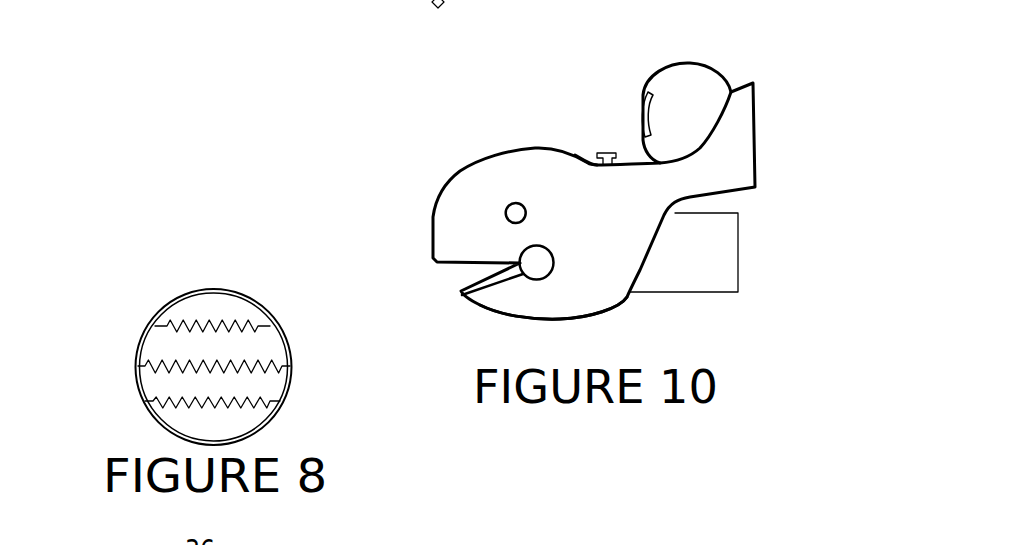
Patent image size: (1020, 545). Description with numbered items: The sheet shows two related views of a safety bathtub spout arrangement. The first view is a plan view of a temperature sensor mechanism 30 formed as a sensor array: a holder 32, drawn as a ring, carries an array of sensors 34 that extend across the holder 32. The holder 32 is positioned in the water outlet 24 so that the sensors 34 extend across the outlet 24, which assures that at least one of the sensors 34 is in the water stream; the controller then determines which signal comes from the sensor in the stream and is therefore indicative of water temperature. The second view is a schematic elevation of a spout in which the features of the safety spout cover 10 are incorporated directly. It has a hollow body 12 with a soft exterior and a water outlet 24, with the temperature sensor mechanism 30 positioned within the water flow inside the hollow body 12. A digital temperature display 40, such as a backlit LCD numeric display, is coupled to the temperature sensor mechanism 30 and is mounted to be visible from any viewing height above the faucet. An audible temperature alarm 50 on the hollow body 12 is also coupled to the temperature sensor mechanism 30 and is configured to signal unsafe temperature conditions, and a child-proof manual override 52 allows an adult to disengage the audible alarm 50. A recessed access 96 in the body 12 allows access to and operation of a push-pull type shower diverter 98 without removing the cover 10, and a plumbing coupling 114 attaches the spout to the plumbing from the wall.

In FIG. 8, the temperature sensor mechanism 30 is at (123, 303).
In FIG. 8, the holder 32 is at (264, 308).
In FIG. 8, the sensors 34 is at (186, 323).
In FIG. 10, the spout cover 10 is at (482, 128).
In FIG. 10, the hollow body 12 is at (598, 220).
In FIG. 10, the water outlet 24 is at (537, 320).
In FIG. 10, the digital temperature display 40 is at (640, 105).
In FIG. 10, the audible temperature alarm 50 is at (538, 266).
In FIG. 10, the manual override 52 is at (516, 203).
In FIG. 10, the recessed access 96 is at (583, 158).
In FIG. 10, the push-pull type shower diverter 98 is at (605, 153).
In FIG. 10, the plumbing coupling 114 is at (713, 268).